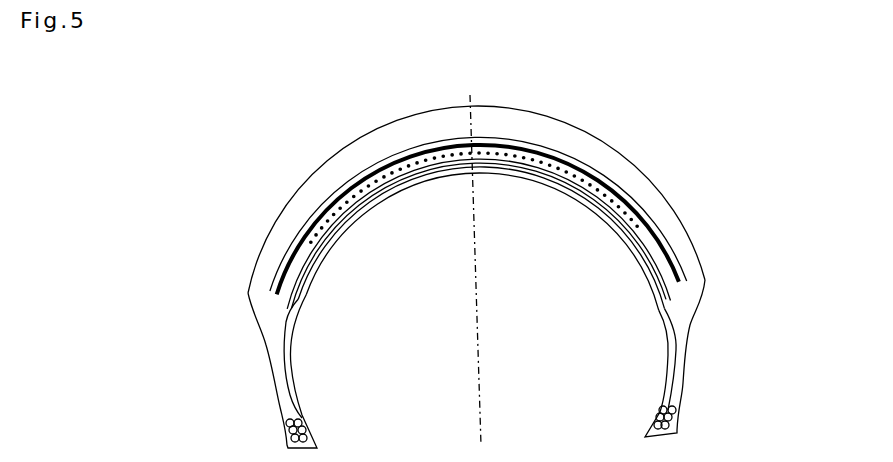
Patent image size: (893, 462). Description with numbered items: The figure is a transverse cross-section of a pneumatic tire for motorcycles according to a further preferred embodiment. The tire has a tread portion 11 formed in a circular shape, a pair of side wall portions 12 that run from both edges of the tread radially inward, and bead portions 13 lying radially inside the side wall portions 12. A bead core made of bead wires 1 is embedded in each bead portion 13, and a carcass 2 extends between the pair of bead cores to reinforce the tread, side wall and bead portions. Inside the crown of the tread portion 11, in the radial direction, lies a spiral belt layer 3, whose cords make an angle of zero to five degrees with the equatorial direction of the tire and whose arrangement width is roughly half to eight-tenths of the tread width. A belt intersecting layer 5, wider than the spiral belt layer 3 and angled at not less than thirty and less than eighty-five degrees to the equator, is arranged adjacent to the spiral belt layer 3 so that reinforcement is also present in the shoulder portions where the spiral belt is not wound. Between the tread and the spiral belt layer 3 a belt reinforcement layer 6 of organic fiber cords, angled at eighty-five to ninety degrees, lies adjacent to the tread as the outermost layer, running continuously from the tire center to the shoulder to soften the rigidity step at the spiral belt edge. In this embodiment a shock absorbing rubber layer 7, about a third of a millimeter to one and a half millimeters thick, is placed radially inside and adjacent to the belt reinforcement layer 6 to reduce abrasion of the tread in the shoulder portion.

The tread portion 11 is at (561, 130).
The belt reinforcement layer 6 is at (593, 170).
The shock absorbing rubber layer 7 is at (657, 232).
The spiral belt layer 3 is at (618, 190).
The belt intersecting layer 5 is at (670, 293).
The carcass 2 is at (678, 377).
The bead wire 1 is at (675, 408).
The side wall portion 12 is at (268, 353).
The bead portion 13 is at (287, 432).